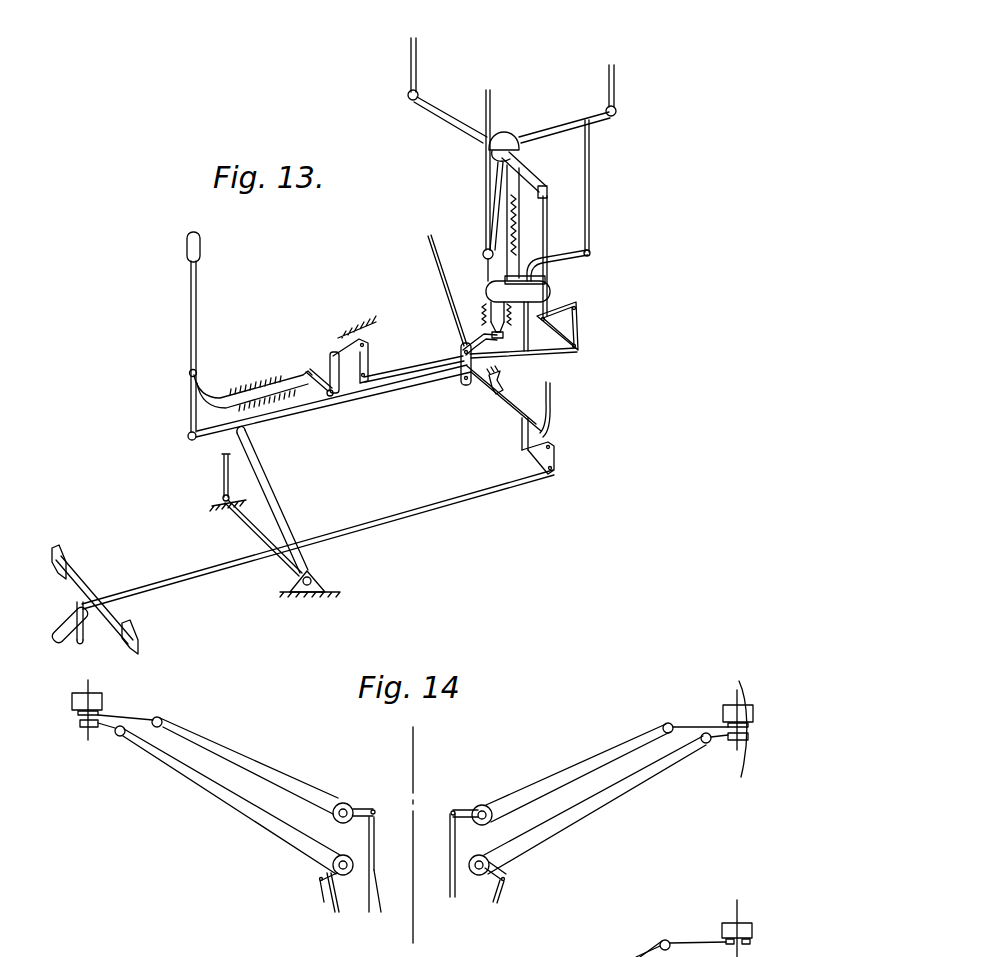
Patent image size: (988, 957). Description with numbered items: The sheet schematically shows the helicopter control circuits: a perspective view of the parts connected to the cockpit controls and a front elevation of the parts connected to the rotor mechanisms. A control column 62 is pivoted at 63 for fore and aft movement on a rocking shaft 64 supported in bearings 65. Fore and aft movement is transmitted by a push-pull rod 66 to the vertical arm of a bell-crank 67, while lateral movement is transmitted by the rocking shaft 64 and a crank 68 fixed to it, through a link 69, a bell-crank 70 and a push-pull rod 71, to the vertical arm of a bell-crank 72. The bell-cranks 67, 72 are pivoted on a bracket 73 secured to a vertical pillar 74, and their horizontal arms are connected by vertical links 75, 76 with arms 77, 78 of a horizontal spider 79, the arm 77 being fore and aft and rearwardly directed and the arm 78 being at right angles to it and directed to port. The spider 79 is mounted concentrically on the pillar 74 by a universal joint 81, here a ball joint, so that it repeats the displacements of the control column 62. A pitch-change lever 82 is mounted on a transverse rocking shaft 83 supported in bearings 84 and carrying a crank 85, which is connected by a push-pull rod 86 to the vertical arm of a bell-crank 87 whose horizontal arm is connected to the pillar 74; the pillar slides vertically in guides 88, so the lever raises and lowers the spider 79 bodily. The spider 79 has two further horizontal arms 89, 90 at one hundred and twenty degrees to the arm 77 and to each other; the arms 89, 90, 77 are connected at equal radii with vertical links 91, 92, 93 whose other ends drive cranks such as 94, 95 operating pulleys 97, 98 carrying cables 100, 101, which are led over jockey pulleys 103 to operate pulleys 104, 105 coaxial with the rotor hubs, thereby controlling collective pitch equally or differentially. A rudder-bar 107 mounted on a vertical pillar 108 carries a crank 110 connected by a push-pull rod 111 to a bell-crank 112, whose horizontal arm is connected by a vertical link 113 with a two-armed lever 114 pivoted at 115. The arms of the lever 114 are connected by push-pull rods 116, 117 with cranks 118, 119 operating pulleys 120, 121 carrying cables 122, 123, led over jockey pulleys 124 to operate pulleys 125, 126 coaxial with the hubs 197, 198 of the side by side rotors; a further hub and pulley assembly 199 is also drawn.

In FIG. 13, the control column 62 is at (200, 285).
In FIG. 13, the pivot 63 is at (189, 372).
In FIG. 13, the rocking shaft 64 is at (282, 378).
In FIG. 13, the bearings 65 is at (248, 380).
In FIG. 13, the push-pull rod 66 is at (190, 441).
In FIG. 13, the bell-crank 67 is at (562, 262).
In FIG. 13, the crank 68 is at (318, 376).
In FIG. 13, the link 69 is at (342, 374).
In FIG. 13, the bell-crank 70 is at (369, 355).
In FIG. 13, the push-pull rod 71 is at (560, 352).
In FIG. 13, the bell-crank 72 is at (582, 322).
In FIG. 13, the bracket 73 is at (556, 290).
In FIG. 13, the vertical pillar 74 is at (498, 260).
In FIG. 13, the vertical link 75 is at (591, 196).
In FIG. 13, the vertical link 76 is at (549, 216).
In FIG. 13, the arm 77 is at (548, 127).
In FIG. 13, the arm 78 is at (531, 172).
In FIG. 13, the horizontal spider 79 is at (481, 149).
In FIG. 13, the universal joint 81 is at (506, 140).
In FIG. 13, the pitch-change lever 82 is at (265, 470).
In FIG. 13, the transverse rocking shaft 83 is at (256, 530).
In FIG. 13, the bearings 84 is at (220, 505).
In FIG. 13, the crank 85 is at (222, 472).
In FIG. 13, the push-pull rod 86 is at (318, 434).
In FIG. 13, the bell-crank 87 is at (470, 340).
In FIG. 13, the guides 88 is at (509, 226).
In FIG. 13, the arm 89 is at (497, 187).
In FIG. 13, the arm 90 is at (445, 120).
In FIG. 13, the vertical link 91 is at (485, 98).
In FIG. 14, the vertical link 91 is at (451, 884).
In FIG. 13, the vertical link 92 is at (417, 76).
In FIG. 14, the vertical link 92 is at (375, 879).
In FIG. 13, the vertical link 93 is at (608, 76).
In FIG. 14, the crank 94 is at (462, 806).
In FIG. 14, the crank 95 is at (362, 806).
In FIG. 14, the pulley 97 is at (488, 807).
In FIG. 14, the pulley 98 is at (336, 804).
In FIG. 14, the cable 100 is at (595, 764).
In FIG. 14, the cable 101 is at (238, 752).
In FIG. 14, the jockey pulleys 103 is at (162, 718).
In FIG. 14, the pulley 104 is at (725, 711).
In FIG. 14, the pulley 105 is at (103, 706).
In FIG. 13, the rudder-bar 107 is at (73, 583).
In FIG. 13, the vertical pillar 108 is at (120, 640).
In FIG. 13, the crank 110 is at (60, 638).
In FIG. 13, the push-pull rod 111 is at (150, 592).
In FIG. 13, the bell-crank 112 is at (556, 458).
In FIG. 13, the vertical link 113 is at (522, 433).
In FIG. 13, the two-armed lever 114 is at (503, 408).
In FIG. 13, the pivot axis 115 is at (494, 391).
In FIG. 13, the push-pull rod 116 is at (553, 400).
In FIG. 14, the push-pull rod 116 is at (500, 895).
In FIG. 13, the push-pull rod 117 is at (432, 254).
In FIG. 14, the push-pull rod 117 is at (320, 900).
In FIG. 14, the crank 118 is at (491, 881).
In FIG. 14, the crank 119 is at (330, 907).
In FIG. 14, the pulley 120 is at (494, 861).
In FIG. 14, the pulley 121 is at (330, 862).
In FIG. 14, the cable 122 is at (572, 802).
In FIG. 14, the cable 123 is at (226, 791).
In FIG. 14, the jockey pulleys 124 is at (122, 737).
In FIG. 14, the pulley 125 is at (738, 745).
In FIG. 14, the pulley 126 is at (83, 728).
In FIG. 14, the hub 197 is at (742, 712).
In FIG. 14, the hub 198 is at (73, 711).
In FIG. 14, the box 199 is at (722, 926).